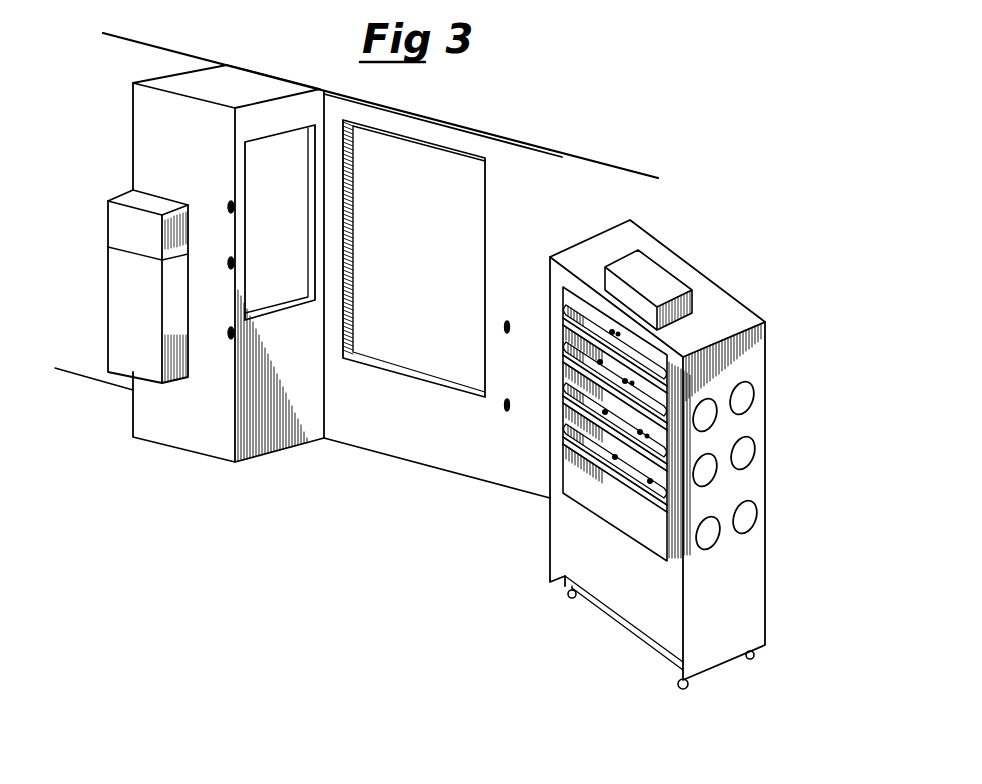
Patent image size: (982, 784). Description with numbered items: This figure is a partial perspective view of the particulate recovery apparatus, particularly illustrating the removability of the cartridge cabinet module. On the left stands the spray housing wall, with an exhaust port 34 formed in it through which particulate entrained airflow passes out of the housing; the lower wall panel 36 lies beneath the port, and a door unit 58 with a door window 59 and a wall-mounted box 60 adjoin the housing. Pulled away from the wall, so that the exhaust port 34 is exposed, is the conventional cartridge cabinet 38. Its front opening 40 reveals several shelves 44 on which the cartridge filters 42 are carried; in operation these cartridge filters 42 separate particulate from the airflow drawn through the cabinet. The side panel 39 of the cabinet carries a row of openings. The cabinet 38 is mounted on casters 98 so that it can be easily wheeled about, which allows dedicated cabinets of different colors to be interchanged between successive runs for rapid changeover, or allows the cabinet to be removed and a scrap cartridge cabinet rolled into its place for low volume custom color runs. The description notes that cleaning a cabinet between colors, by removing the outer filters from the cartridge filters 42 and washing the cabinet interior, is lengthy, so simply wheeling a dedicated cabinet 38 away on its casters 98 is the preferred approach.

The exhaust port 34 is at (402, 252).
The wall panel 36 is at (398, 434).
The conventional cartridge cabinet 38 is at (768, 414).
The cart side panel with holes 39 is at (752, 590).
The cart shelf opening 40 is at (610, 505).
The cartridge filters 42 is at (648, 440).
The shelves 44 is at (567, 437).
The cartridge cabinet 58 is at (303, 424).
The door window 59 is at (267, 217).
The wall-mounted box 60 is at (126, 358).
The casters 98 is at (577, 600).